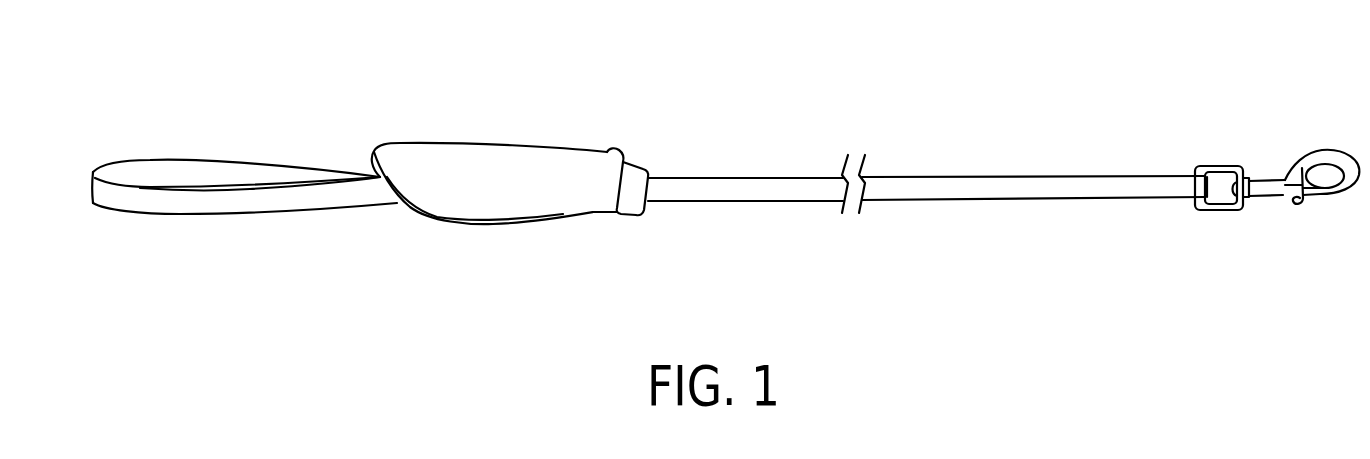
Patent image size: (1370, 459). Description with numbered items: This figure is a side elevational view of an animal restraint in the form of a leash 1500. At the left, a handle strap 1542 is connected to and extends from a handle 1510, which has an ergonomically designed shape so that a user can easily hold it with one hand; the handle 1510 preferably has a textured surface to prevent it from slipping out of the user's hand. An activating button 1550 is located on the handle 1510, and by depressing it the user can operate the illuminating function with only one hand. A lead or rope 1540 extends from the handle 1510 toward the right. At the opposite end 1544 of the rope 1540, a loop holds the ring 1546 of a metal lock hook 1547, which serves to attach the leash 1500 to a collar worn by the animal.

The leash 1500 is at (625, 95).
The handle 1510 is at (430, 152).
The lead or rope 1540 is at (797, 202).
The handle strap 1542 is at (195, 205).
The opposite end of the rope 1544 is at (1187, 202).
The ring 1546 is at (1218, 170).
The metal lock hook 1547 is at (1278, 190).
The activating button 1550 is at (617, 153).